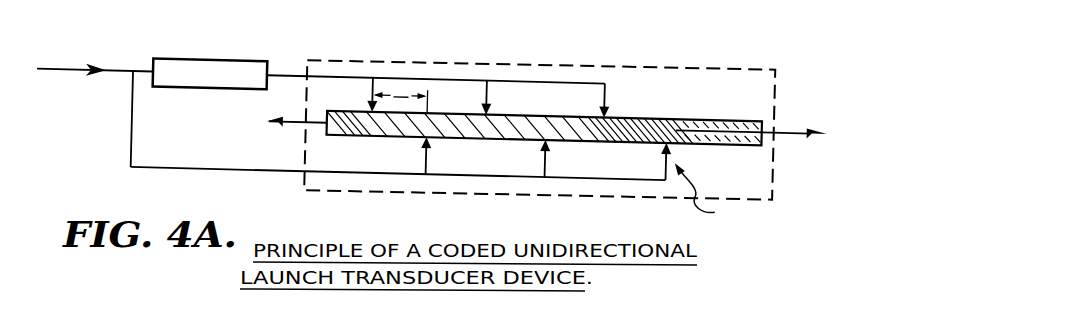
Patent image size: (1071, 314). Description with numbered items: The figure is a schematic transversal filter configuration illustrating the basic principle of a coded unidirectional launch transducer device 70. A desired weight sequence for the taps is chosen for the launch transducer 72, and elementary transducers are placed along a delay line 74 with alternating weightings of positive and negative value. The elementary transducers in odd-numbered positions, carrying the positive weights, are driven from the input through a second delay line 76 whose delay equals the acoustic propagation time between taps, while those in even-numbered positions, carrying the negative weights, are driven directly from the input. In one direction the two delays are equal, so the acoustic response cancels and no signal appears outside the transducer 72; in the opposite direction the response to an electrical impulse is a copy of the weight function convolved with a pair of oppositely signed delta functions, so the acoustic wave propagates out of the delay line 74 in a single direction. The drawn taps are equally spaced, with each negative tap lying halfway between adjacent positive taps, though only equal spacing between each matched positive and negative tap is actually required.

The coded unidirectional launch transducer device 70 is at (100, 128).
The launch transducer 72 is at (482, 184).
The delay line 74 is at (665, 106).
The second delay line 76 is at (205, 58).